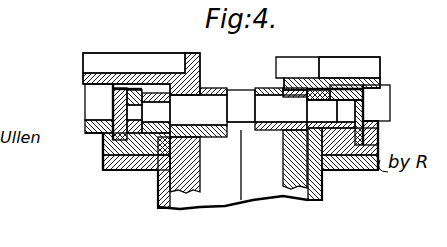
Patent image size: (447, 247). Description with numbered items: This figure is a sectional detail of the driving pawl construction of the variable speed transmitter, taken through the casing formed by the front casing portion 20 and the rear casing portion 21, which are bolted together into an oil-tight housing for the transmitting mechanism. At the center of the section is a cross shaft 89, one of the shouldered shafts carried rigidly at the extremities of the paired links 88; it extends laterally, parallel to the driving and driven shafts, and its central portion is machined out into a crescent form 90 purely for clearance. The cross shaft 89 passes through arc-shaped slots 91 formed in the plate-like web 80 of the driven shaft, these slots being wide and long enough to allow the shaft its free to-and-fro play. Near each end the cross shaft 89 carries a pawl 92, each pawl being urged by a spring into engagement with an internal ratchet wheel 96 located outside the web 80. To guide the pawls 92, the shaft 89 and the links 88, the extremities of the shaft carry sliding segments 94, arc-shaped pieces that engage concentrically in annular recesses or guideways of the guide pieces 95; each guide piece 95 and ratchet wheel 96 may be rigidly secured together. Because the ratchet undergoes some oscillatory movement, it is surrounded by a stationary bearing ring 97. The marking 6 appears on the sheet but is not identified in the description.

The cap extension 6 is at (349, 40).
The front casing portion 20 is at (273, 196).
The rear casing portion 21 is at (98, 126).
The web 80 is at (200, 163).
The links 88 is at (207, 78).
The cross shaft 89 is at (275, 120).
The crescent form 90 is at (242, 100).
The slots 91 is at (160, 174).
The pawl 92 is at (160, 90).
The sliding segments 94 is at (127, 95).
The guide pieces 95 is at (82, 85).
The internal ratchet wheel 96 is at (110, 148).
The stationary bearing ring 97 is at (123, 168).